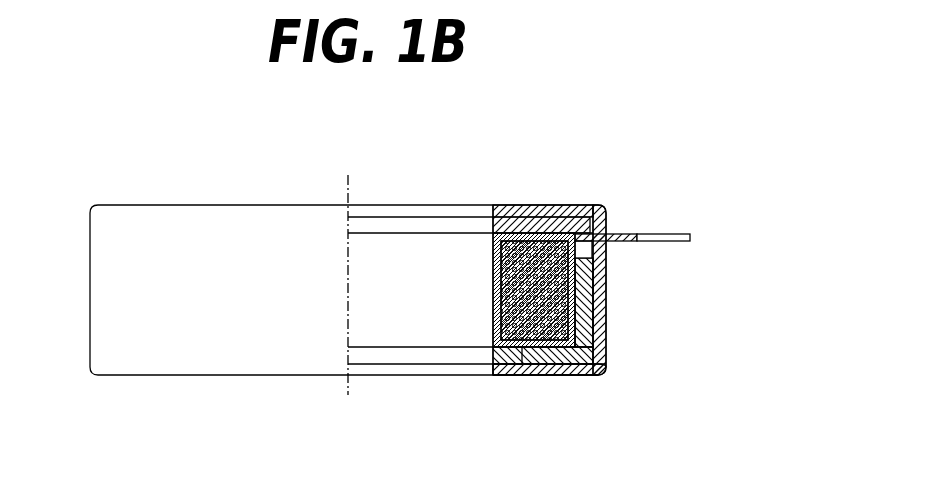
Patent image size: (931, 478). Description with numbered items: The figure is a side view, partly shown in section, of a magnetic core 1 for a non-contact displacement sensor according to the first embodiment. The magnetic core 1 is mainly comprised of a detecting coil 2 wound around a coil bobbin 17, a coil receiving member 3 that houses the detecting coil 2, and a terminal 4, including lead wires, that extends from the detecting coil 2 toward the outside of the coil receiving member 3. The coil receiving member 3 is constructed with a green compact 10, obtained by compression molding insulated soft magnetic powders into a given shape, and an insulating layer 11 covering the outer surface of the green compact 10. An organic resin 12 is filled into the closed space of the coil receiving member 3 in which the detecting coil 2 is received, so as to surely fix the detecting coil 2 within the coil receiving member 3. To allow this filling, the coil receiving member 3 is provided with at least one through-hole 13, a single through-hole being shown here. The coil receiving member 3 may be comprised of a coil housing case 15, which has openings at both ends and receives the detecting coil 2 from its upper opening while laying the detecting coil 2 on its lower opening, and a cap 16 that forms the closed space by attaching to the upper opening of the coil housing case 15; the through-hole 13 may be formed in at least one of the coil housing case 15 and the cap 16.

The magnetic core 1 is at (603, 150).
The detecting coil 2 is at (519, 375).
The coil receiving member 3 is at (760, 277).
The terminal 4 is at (668, 233).
The green compact 10 is at (703, 302).
The insulating layer 11 is at (607, 266).
The organic resin 12 is at (570, 375).
The through-hole 13 is at (585, 248).
The coil housing case 15 is at (607, 348).
The cap 16 is at (607, 292).
The coil bobbin 17 is at (492, 288).